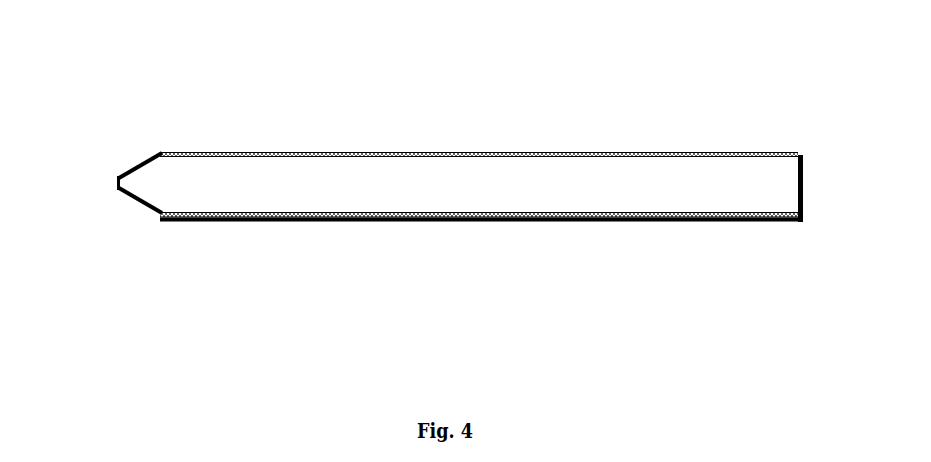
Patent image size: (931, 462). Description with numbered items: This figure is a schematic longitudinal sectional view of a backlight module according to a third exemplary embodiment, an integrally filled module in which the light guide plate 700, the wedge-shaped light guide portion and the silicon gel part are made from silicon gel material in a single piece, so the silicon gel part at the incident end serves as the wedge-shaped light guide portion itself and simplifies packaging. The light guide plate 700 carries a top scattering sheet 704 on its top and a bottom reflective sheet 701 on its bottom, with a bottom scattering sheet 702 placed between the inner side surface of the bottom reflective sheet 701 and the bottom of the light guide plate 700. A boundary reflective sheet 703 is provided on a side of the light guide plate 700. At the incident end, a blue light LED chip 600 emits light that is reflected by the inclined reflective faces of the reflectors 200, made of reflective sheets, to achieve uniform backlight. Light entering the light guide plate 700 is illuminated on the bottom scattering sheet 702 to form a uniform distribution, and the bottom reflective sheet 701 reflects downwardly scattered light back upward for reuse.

The reflector 200 is at (152, 153).
The blue light LED chip 600 is at (119, 186).
The light guide plate 700 is at (488, 202).
The bottom reflective sheet 701 is at (479, 222).
The bottom scattering sheet 702 is at (532, 213).
The boundary reflective sheet 703 is at (803, 185).
The top scattering sheet 704 is at (480, 152).